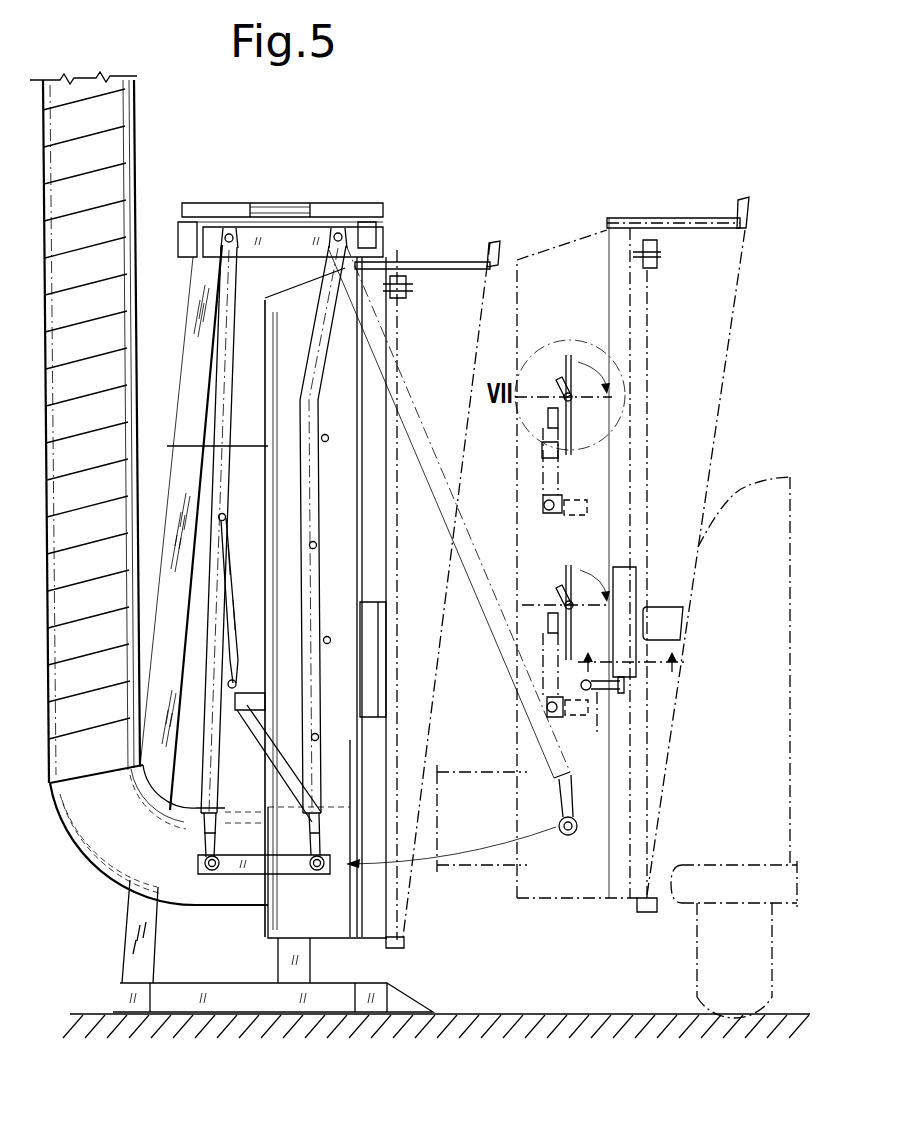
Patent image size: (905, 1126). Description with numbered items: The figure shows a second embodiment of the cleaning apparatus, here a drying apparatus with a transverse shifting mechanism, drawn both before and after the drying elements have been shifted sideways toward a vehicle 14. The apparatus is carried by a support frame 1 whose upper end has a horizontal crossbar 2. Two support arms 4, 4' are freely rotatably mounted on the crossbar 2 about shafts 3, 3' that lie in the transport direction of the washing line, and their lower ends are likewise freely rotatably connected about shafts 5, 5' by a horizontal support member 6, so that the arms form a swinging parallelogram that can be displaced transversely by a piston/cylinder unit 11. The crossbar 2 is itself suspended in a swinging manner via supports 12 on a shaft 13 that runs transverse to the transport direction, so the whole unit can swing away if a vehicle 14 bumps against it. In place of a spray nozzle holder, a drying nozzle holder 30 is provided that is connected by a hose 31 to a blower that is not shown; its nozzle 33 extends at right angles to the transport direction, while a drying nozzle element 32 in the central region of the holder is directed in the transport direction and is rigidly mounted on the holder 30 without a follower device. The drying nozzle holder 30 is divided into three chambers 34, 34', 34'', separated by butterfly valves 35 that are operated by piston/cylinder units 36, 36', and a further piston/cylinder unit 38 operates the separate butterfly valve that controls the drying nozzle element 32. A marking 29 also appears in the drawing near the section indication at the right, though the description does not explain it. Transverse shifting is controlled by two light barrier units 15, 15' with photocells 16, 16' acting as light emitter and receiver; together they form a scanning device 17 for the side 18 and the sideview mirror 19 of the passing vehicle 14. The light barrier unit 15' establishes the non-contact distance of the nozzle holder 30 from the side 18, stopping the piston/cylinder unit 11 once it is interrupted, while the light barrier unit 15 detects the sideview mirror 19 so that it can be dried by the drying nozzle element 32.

The support frame 1 is at (196, 302).
The horizontal crossbar 2 is at (270, 240).
The shaft 3 is at (215, 181).
The shaft 3' is at (331, 185).
The support arm 4 is at (193, 552).
The support arm 4' is at (427, 550).
The shaft 5 is at (199, 905).
The shaft 5' is at (453, 880).
The horizontal support member 6 is at (275, 897).
The piston/cylinder unit 11 is at (227, 632).
The support 12 is at (243, 205).
The shaft 13 is at (292, 205).
The vehicle 14 is at (768, 493).
The light barrier unit 15 is at (551, 584).
The light barrier unit 15' is at (574, 583).
The photocell 16 is at (522, 562).
The photocell 16' is at (576, 546).
The scanning device 17 is at (440, 240).
The side 18 is at (682, 838).
The sideview mirror 19 is at (661, 608).
The section line 29 is at (692, 660).
The drying nozzle holder 30 is at (542, 522).
The hose 31 is at (120, 408).
The drying nozzle element 32 is at (370, 678).
The nozzle 33 is at (388, 584).
The chamber 34 is at (464, 819).
The chamber 34' is at (443, 591).
The chamber 34'' is at (436, 560).
The butterfly valve 35 is at (560, 383).
The piston/cylinder unit 36 is at (520, 666).
The piston/cylinder unit 36' is at (536, 461).
The piston/cylinder unit 38 is at (602, 720).